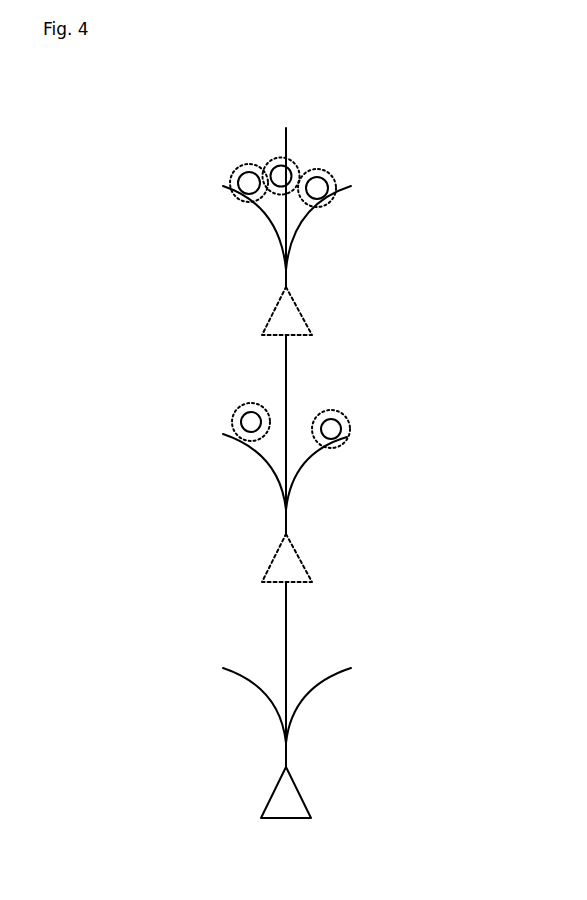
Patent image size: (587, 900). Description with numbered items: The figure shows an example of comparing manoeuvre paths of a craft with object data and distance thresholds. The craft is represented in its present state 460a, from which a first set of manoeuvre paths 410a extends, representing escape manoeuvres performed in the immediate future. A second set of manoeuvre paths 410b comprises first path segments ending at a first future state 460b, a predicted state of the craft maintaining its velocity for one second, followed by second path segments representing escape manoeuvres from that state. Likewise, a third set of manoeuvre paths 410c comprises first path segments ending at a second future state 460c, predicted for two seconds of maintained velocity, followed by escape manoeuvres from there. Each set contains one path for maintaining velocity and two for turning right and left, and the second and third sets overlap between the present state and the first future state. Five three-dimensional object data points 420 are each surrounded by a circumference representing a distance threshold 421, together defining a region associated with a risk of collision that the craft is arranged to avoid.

The first set of manoeuvre paths 410a is at (325, 683).
The second set of manoeuvre paths 410b is at (262, 463).
The third set of manoeuvre paths 410c is at (262, 213).
The three-dimensional object data point 420 is at (333, 412).
The distance threshold 421 is at (352, 420).
The present state 460a is at (280, 818).
The first future state 460b is at (262, 582).
The second future state 460c is at (262, 334).